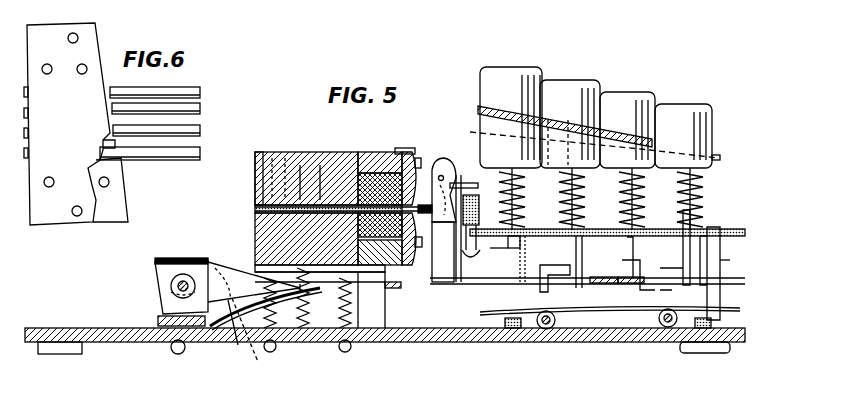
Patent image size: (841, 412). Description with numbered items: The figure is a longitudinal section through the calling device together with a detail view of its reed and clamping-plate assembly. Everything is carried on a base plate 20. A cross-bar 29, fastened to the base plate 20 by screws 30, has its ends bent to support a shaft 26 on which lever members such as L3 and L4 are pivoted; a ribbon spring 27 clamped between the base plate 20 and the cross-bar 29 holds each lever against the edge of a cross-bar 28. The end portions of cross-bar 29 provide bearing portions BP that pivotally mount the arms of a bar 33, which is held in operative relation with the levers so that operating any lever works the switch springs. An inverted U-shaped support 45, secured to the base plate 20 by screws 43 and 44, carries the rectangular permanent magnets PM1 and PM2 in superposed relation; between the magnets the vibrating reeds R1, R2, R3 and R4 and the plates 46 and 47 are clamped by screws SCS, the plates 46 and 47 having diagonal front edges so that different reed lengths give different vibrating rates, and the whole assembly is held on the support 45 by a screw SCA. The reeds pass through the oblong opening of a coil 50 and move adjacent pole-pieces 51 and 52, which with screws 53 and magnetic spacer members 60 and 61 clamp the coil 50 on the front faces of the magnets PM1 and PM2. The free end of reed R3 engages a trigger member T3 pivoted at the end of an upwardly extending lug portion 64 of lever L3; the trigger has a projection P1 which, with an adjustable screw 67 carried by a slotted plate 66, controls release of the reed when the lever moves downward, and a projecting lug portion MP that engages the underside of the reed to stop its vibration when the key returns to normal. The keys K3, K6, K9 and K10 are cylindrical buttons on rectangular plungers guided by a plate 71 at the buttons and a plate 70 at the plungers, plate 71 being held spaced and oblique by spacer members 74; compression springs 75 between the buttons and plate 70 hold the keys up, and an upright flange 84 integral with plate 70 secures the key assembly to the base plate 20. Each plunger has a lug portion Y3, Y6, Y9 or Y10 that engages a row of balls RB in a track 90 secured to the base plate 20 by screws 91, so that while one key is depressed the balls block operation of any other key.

In FIG. 5, the base plate 20 is at (582, 342).
In FIG. 5, the shaft 26 is at (178, 286).
In FIG. 5, the ribbon spring 27 is at (225, 318).
In FIG. 5, the cross-bar 28 is at (510, 250).
In FIG. 5, the cross-bar 29 is at (160, 328).
In FIG. 5, the screws 30 is at (185, 345).
In FIG. 5, the bar 33 is at (370, 300).
In FIG. 5, the screw 43 is at (276, 348).
In FIG. 5, the screw 44 is at (351, 348).
In FIG. 5, the inverted U-shaped support 45 is at (318, 318).
In FIG. 6, the plate 46 is at (58, 220).
In FIG. 5, the plate 46 is at (256, 190).
In FIG. 6, the plate 47 is at (122, 220).
In FIG. 5, the plate 47 is at (256, 218).
In FIG. 5, the coil 50 is at (372, 173).
In FIG. 5, the pole-piece 51 is at (410, 152).
In FIG. 5, the pole-piece 52 is at (405, 265).
In FIG. 5, the screws 53 is at (418, 158).
In FIG. 5, the spacer member 60 is at (385, 265).
In FIG. 5, the spacer member 61 is at (380, 152).
In FIG. 5, the lug portion 64 is at (446, 252).
In FIG. 5, the plate 66 is at (479, 208).
In FIG. 5, the adjustable screw 67 is at (467, 251).
In FIG. 5, the plate 70 is at (716, 220).
In FIG. 5, the plate 71 is at (490, 110).
In FIG. 5, the spacer member 74 is at (584, 141).
In FIG. 5, the compression spring 75 is at (620, 200).
In FIG. 5, the upright flange 84 is at (735, 268).
In FIG. 5, the track 90 is at (580, 309).
In FIG. 5, the screws 91 is at (512, 328).
In FIG. 5, the bearing portions BP is at (247, 339).
In FIG. 5, the key member K3 is at (511, 117).
In FIG. 5, the key member K6 is at (570, 124).
In FIG. 5, the key member K9 is at (627, 130).
In FIG. 5, the key member K10 is at (683, 136).
In FIG. 5, the lever member L3 is at (237, 331).
In FIG. 5, the lever member L4 is at (216, 262).
In FIG. 5, the projecting lug portion MP is at (428, 205).
In FIG. 5, the projection P1 is at (462, 175).
In FIG. 5, the permanent magnet PM1 is at (256, 248).
In FIG. 5, the permanent magnet PM2 is at (256, 160).
In FIG. 6, the vibrating reed R1 is at (193, 160).
In FIG. 6, the vibrating reed R2 is at (193, 134).
In FIG. 6, the vibrating reed R3 is at (192, 112).
In FIG. 5, the vibrating reed R3 is at (402, 148).
In FIG. 6, the vibrating reed R4 is at (190, 90).
In FIG. 5, the balls RB is at (548, 329).
In FIG. 5, the screw SCA is at (305, 170).
In FIG. 5, the screws SCS is at (300, 160).
In FIG. 5, the trigger member T3 is at (446, 158).
In FIG. 5, the lug portion Y3 is at (532, 270).
In FIG. 5, the lug portion Y6 is at (553, 280).
In FIG. 5, the lug portion Y9 is at (638, 271).
In FIG. 5, the lug portion Y10 is at (680, 290).